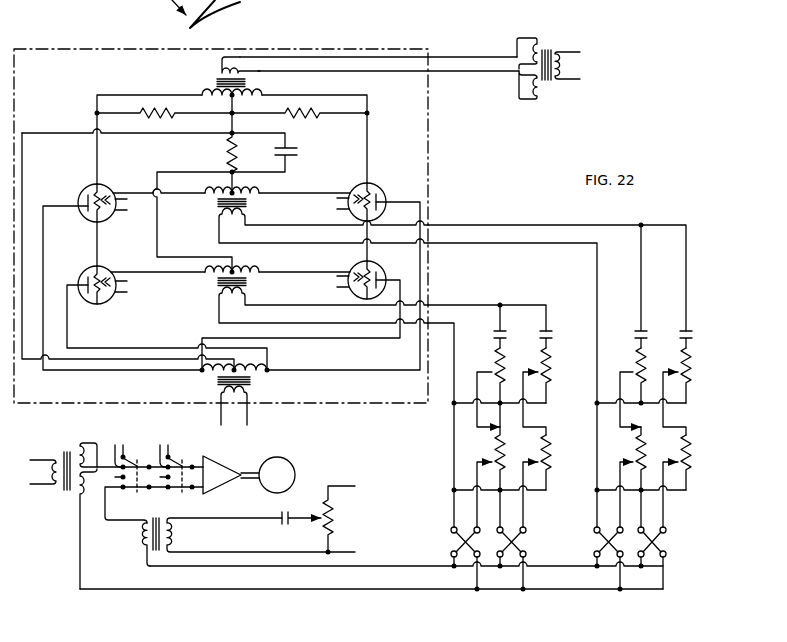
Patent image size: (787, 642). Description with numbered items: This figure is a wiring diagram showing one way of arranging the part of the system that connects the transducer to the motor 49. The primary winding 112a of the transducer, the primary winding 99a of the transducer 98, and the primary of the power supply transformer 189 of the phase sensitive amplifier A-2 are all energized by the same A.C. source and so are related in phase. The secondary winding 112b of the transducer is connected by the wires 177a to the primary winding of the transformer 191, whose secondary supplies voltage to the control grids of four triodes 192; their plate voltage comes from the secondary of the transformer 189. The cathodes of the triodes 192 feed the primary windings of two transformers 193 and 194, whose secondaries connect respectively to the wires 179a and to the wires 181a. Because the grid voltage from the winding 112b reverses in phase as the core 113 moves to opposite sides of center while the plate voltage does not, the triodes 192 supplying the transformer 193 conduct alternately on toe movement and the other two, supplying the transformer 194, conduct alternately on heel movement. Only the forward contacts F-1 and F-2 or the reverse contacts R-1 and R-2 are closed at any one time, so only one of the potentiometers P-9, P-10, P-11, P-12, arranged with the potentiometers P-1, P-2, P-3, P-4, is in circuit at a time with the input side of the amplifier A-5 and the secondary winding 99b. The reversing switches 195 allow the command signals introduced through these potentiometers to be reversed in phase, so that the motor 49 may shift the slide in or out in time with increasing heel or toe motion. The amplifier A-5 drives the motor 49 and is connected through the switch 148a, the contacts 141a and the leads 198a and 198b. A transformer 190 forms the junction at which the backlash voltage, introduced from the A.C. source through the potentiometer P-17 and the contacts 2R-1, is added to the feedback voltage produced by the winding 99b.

The transformer 191 is at (211, 77).
The wires 177a is at (344, 72).
The secondary winding 112b is at (533, 37).
The primary winding 112a is at (558, 52).
The core 113 is at (549, 82).
The triodes 192 is at (378, 187).
The transformer 193 is at (212, 208).
The transformer 194 is at (212, 286).
The power supply transformer 189 is at (214, 386).
The wires 181a is at (502, 241).
The wires 179a is at (442, 321).
The reversing switches 195 is at (463, 544).
The transducer 98 is at (65, 455).
The primary winding 99a is at (43, 484).
The secondary winding 99b is at (92, 440).
The relay switch 148a is at (179, 456).
The relay contacts 141a is at (136, 491).
The lead 198a is at (107, 470).
The lead 198b is at (104, 507).
The transformer 190 is at (139, 537).
The motor 49 is at (288, 463).
The phase sensitive amplifier A-2 is at (428, 127).
The amplifier A-5 is at (232, 451).
The forward contact F-1 is at (496, 331).
The reverse contact R-1 is at (543, 331).
The forward contact F-2 is at (638, 331).
The reverse contact R-2 is at (684, 331).
The potentiometer P-1 is at (496, 362).
The potentiometer P-2 is at (543, 362).
The potentiometer P-3 is at (637, 362).
The potentiometer P-4 is at (683, 362).
The potentiometer P-9 is at (497, 451).
The potentiometer P-10 is at (544, 451).
The potentiometer P-11 is at (639, 451).
The potentiometer P-12 is at (684, 451).
The potentiometer P-17 is at (333, 511).
The contacts 2R-1 is at (280, 515).